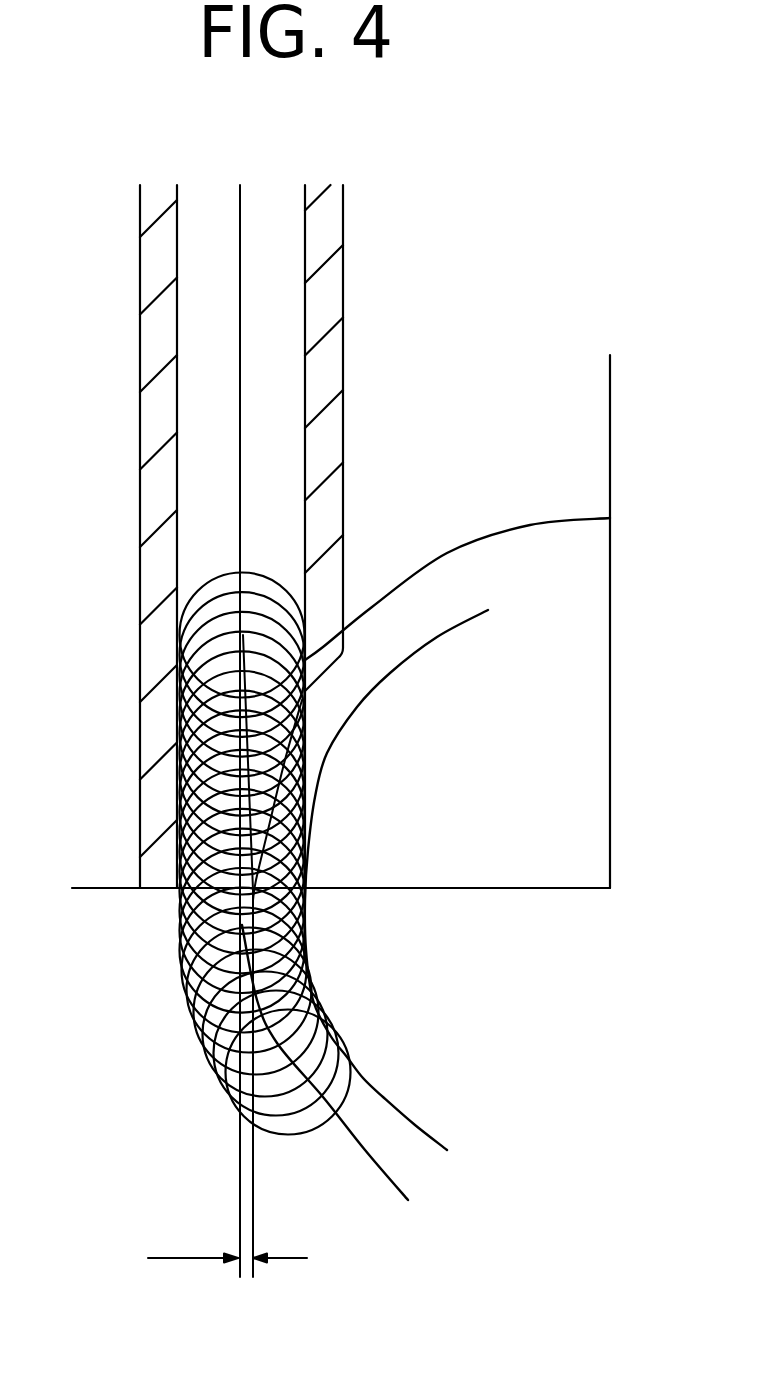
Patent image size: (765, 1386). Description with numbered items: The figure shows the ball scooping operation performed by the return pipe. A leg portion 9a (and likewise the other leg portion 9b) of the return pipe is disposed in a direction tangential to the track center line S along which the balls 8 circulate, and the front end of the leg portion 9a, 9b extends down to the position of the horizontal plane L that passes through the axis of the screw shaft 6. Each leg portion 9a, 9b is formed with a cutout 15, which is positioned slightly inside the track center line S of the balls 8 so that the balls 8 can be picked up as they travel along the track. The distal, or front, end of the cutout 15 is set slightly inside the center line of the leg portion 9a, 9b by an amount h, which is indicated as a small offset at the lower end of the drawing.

The leg portion 9a is at (287, 373).
The leg portion 9b is at (287, 373).
The cutout 15 is at (333, 693).
The screw shaft 6 is at (442, 657).
The track center line S is at (528, 525).
The horizontal plane L is at (458, 888).
The balls 8 is at (337, 1078).
The offset amount h is at (227, 1236).